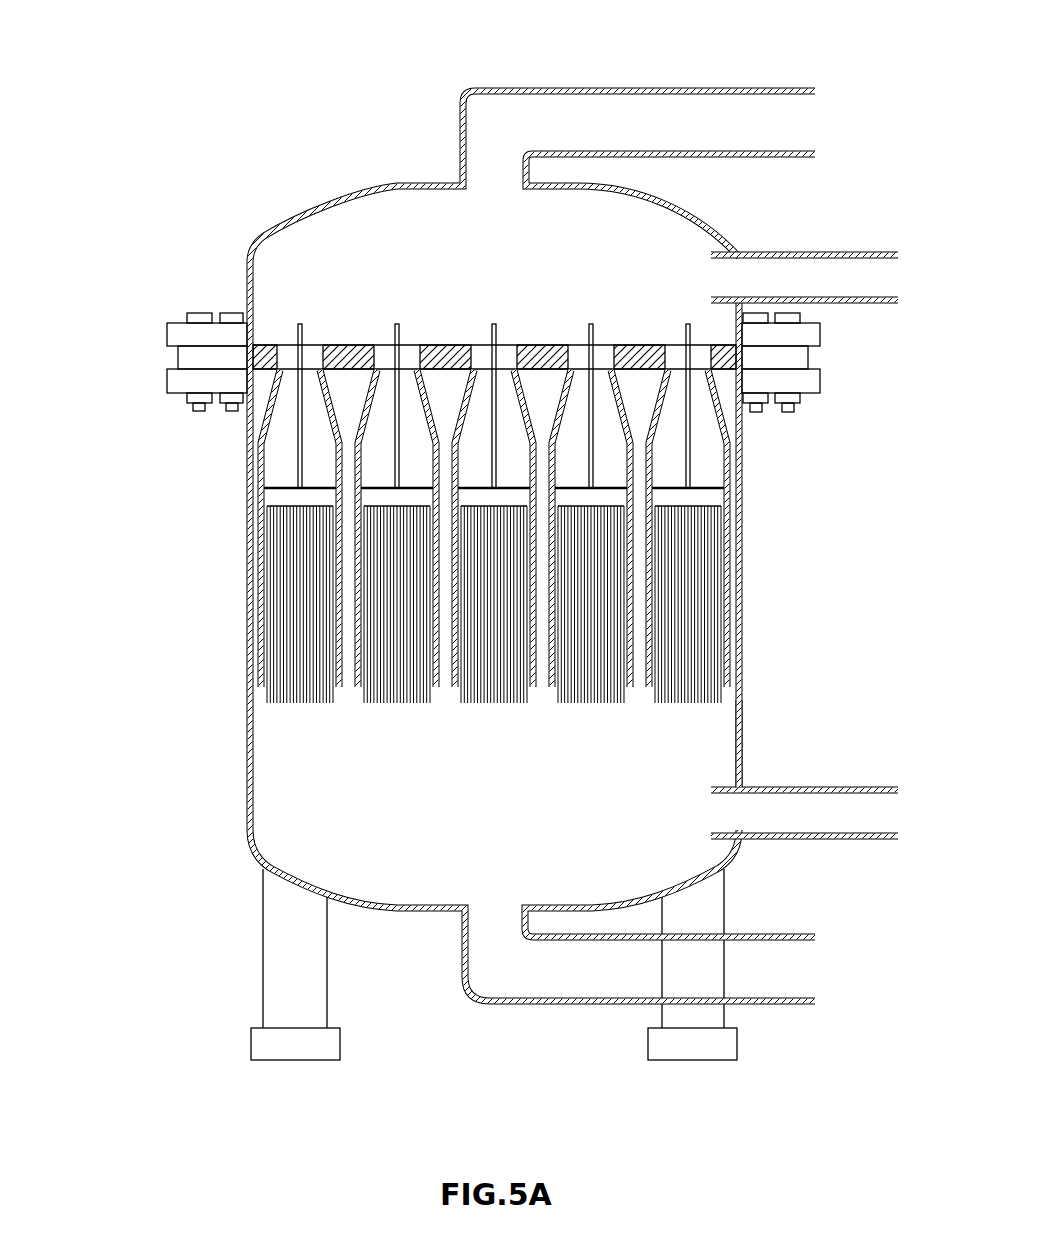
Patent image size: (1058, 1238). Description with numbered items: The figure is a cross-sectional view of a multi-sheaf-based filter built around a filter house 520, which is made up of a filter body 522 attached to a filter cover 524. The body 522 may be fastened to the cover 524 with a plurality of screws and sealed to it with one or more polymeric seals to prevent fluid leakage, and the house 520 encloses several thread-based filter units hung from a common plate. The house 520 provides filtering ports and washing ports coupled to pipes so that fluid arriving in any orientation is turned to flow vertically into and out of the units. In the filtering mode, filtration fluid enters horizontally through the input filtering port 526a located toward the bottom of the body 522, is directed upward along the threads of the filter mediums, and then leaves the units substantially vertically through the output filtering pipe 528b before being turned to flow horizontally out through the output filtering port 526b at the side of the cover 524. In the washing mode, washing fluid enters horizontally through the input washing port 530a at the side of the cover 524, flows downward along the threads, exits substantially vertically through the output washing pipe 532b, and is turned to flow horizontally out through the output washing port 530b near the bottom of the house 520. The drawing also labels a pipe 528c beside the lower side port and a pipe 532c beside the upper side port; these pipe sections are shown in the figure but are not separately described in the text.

The filter house 520 is at (163, 193).
The filter body 522 is at (283, 772).
The filter cover 524 is at (283, 268).
The input filtering port 526a is at (728, 811).
The output filtering port 526b is at (487, 190).
The output filtering pipe 528b is at (735, 82).
The lower side conduit 528c is at (872, 782).
The input washing port 530a is at (711, 277).
The output washing port 530b is at (498, 910).
The output washing pipe 532b is at (545, 1013).
The upper side conduit 532c is at (850, 245).